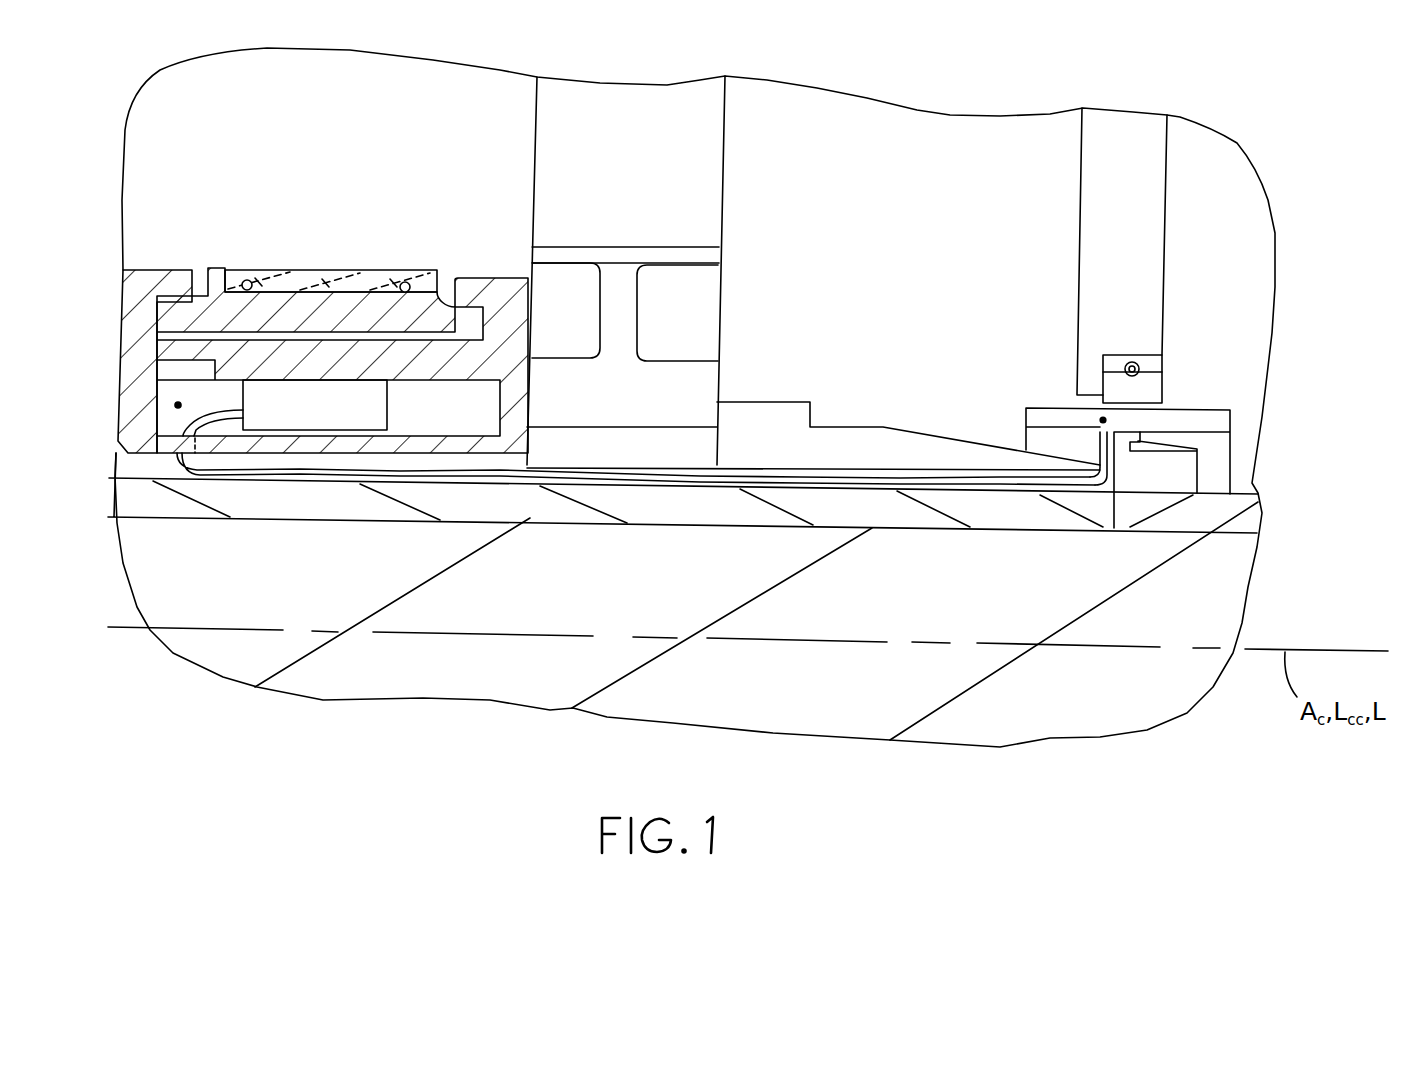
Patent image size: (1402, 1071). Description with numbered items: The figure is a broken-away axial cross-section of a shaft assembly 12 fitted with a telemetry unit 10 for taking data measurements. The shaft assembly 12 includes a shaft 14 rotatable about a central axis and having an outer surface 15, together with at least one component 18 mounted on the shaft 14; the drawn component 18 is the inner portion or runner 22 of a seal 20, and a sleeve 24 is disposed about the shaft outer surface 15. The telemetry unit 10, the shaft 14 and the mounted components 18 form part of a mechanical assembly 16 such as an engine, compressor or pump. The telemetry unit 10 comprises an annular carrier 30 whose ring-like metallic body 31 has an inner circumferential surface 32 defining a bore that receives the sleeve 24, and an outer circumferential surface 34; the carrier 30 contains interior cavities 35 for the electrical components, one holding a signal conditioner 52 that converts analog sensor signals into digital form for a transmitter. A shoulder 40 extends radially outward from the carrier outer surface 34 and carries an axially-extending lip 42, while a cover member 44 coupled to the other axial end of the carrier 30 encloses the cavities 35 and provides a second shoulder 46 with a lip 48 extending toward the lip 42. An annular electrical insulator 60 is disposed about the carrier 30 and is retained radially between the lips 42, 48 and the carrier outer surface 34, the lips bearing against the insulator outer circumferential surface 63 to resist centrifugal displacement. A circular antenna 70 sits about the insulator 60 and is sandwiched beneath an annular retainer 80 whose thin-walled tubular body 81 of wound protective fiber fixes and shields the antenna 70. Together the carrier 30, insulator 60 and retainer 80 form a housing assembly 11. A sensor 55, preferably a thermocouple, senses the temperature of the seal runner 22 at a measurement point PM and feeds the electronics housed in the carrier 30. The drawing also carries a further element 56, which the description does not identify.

The telemetry unit 10 is at (297, 187).
The housing assembly 11 is at (437, 258).
The shaft assembly 12 is at (869, 285).
The shaft 14 is at (1227, 590).
The outer surface 15 is at (708, 520).
The mechanical assembly 16 is at (1290, 168).
The component 18 is at (730, 360).
The seal 20 is at (1180, 370).
The inner portion/runner 22 is at (1213, 410).
The sleeve 24 is at (433, 512).
The annular carrier 30 is at (118, 369).
The ring-like body 31 is at (527, 395).
The inner circumferential surface 32 is at (473, 462).
The outer circumferential surface 34 is at (462, 336).
The interior cavities 35 is at (178, 405).
The shoulder 40 is at (527, 291).
The lip 42 is at (479, 283).
The cover member 44 is at (125, 299).
The second shoulder 46 is at (143, 270).
The lip 48 is at (178, 268).
The signal conditioner 52 is at (290, 432).
The sensor 55 is at (1090, 436).
The cable 56 is at (638, 480).
The electrical insulator 60 is at (418, 342).
The outer circumferential surface 63 is at (468, 300).
The circular antenna 70 is at (247, 279).
The retainer 80 is at (331, 265).
The tubular body 81 is at (293, 270).
The measurement point PM is at (1103, 420).